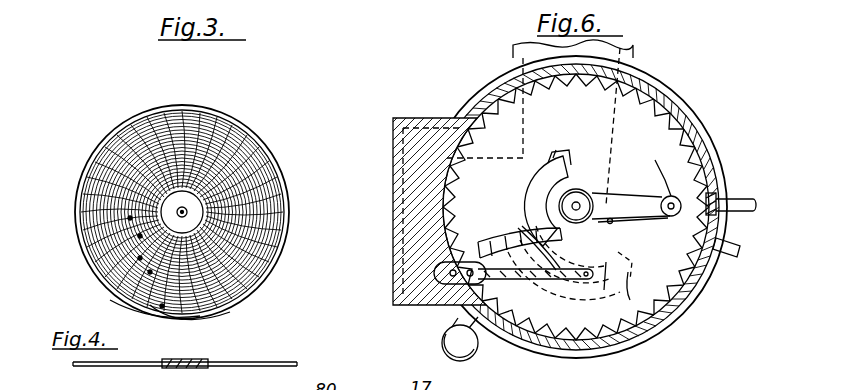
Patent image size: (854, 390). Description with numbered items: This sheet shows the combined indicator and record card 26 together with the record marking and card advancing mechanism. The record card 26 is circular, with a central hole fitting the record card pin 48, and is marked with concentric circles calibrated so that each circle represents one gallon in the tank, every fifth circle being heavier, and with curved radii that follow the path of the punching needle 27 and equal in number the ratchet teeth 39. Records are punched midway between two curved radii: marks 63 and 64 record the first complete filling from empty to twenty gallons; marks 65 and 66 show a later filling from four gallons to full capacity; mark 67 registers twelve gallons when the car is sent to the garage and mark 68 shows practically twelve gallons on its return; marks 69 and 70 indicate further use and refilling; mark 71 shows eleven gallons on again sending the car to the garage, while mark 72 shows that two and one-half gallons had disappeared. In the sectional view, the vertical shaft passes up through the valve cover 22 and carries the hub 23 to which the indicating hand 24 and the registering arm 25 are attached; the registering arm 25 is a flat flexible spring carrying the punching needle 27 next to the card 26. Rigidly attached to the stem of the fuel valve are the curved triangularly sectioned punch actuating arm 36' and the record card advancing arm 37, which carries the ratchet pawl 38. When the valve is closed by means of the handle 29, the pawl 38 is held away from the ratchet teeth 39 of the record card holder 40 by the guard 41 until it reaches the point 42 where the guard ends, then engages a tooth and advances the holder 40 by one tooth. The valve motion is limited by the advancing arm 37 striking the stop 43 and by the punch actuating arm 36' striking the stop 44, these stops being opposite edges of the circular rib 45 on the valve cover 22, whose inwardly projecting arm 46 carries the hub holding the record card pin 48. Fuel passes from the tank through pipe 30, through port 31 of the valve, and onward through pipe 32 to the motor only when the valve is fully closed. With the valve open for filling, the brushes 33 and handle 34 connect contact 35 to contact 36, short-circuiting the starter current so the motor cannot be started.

In FIG. 3, the record card 26 is at (240, 162).
In FIG. 4, the record card 26 is at (232, 362).
In FIG. 3, the record mark 63 is at (284, 217).
In FIG. 3, the record mark 65 is at (286, 228).
In FIG. 3, the record mark 67 is at (285, 242).
In FIG. 3, the record mark 64 is at (245, 300).
In FIG. 3, the record mark 66 is at (160, 310).
In FIG. 3, the record mark 69 is at (125, 205).
In FIG. 3, the record mark 72 is at (140, 236).
In FIG. 3, the record mark 71 is at (140, 258).
In FIG. 3, the record mark 68 is at (150, 272).
In FIG. 3, the record mark 70 is at (155, 287).
In FIG. 6, the valve cover 22 is at (665, 95).
In FIG. 6, the ratchet teeth 39 is at (505, 98).
In FIG. 6, the record card holder 40 is at (672, 130).
In FIG. 6, the guard 41 is at (682, 140).
In FIG. 6, the record card pin 48 is at (579, 202).
In FIG. 6, the inwardly projecting arm 46 is at (546, 201).
In FIG. 6, the stop 43 is at (568, 152).
In FIG. 6, the circular rib 45 is at (553, 150).
In FIG. 6, the stop 44 is at (522, 212).
In FIG. 6, the record marker punch actuating arm 36' is at (497, 243).
In FIG. 6, the brush 33 is at (545, 268).
In FIG. 6, the hub 23 is at (443, 272).
In FIG. 6, the record card advancing arm 37 is at (636, 206).
In FIG. 6, the ratchet pawl 38 is at (656, 160).
In FIG. 6, the indicating hand 24 is at (612, 225).
In FIG. 6, the registering arm 25 is at (618, 264).
In FIG. 6, the punching needle 27 is at (632, 268).
In FIG. 6, the pipe 30 is at (736, 196).
In FIG. 6, the pipe 32 is at (736, 254).
In FIG. 6, the handle 29 is at (452, 334).
In FIG. 6, the handle 34 is at (496, 312).
In FIG. 6, the port 31 is at (604, 332).
In FIG. 6, the contact 35 is at (612, 282).
In FIG. 6, the contact 36 is at (661, 346).
In FIG. 6, the point 42 is at (572, 90).